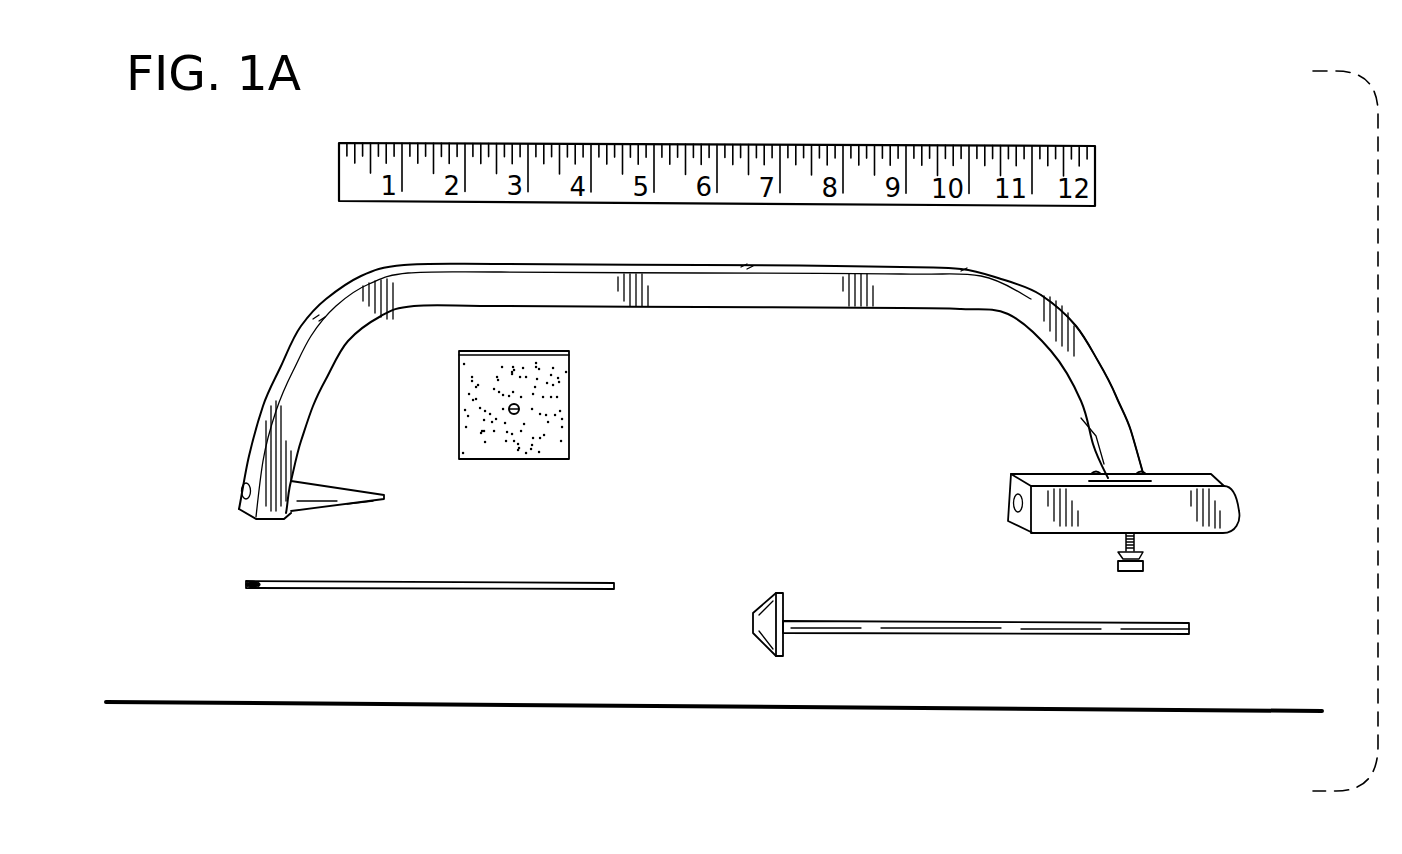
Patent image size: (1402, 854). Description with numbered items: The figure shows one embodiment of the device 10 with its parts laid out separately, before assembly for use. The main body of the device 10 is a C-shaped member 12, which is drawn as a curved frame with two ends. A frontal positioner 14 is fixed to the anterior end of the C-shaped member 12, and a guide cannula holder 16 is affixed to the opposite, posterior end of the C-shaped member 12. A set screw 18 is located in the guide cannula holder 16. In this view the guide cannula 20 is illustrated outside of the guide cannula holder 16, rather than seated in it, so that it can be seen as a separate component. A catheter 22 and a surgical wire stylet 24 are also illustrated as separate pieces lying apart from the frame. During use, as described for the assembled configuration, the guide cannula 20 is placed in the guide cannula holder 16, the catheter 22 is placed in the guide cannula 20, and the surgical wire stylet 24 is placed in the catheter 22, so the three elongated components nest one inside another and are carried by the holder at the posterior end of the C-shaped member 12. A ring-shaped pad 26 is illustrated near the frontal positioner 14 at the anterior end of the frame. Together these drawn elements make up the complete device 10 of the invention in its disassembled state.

The device 10 is at (300, 330).
The C-shaped member 12 is at (1090, 332).
The frontal positioner 14 is at (332, 482).
The guide cannula holder 16 is at (1230, 519).
The set screw 18 is at (1113, 552).
The guide cannula 20 is at (890, 618).
The catheter 22 is at (477, 580).
The surgical wire stylet 24 is at (512, 701).
The ring-shaped pad 26 is at (468, 375).